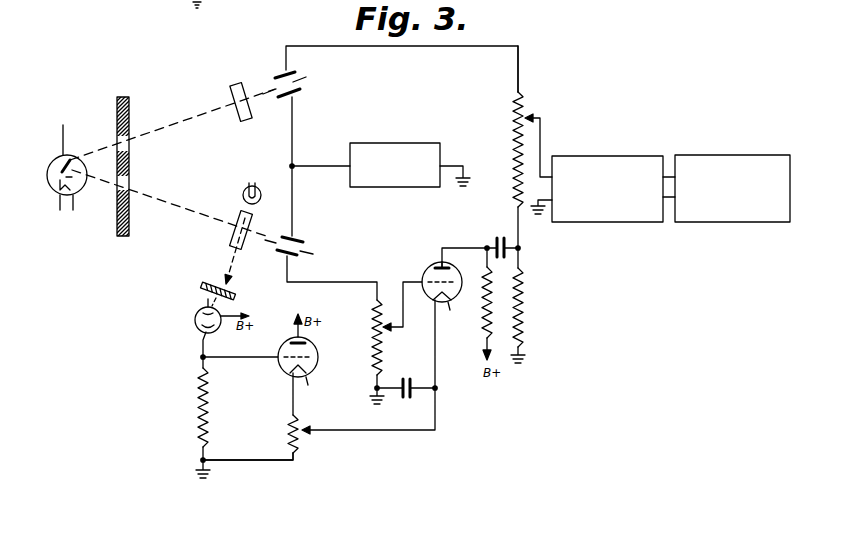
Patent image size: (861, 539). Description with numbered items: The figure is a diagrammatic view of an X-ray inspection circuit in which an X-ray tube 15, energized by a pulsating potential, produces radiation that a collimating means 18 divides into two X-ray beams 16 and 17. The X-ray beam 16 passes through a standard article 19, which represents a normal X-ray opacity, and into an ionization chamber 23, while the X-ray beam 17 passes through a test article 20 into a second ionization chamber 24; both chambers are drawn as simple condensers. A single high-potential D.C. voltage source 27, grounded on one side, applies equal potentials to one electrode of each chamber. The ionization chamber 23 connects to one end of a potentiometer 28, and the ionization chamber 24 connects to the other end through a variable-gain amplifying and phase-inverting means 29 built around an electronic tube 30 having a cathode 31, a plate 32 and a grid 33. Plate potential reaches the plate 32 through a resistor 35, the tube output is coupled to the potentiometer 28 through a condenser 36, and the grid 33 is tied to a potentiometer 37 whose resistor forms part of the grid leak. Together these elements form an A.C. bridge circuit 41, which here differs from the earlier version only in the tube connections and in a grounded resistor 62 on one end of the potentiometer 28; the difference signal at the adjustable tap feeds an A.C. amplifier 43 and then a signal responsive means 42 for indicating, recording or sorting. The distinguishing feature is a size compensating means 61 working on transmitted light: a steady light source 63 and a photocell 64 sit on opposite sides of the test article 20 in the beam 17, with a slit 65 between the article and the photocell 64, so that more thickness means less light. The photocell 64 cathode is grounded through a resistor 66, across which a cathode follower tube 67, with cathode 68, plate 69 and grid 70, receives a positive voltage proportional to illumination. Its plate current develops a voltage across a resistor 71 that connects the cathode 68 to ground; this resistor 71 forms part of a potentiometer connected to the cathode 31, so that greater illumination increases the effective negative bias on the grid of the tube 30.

The X-ray tube 15 is at (72, 156).
The X-ray beam 16 is at (180, 117).
The X-ray beam 17 is at (172, 200).
The collimating means 18 is at (122, 97).
The standard article 19 is at (238, 86).
The test article 20 is at (230, 237).
The ionization chamber 23 is at (300, 93).
The ionization chamber 24 is at (305, 237).
The voltage source 27 is at (423, 143).
The potentiometer 28 is at (526, 109).
The variable-gain amplifying and phase-inverting means 29 is at (429, 253).
The electronic tube 30 is at (424, 266).
The cathode 31 is at (433, 307).
The anode or plate 32 is at (452, 268).
The grid 33 is at (455, 296).
The resistor 35 is at (482, 334).
The condenser 36 is at (502, 238).
The potentiometer 37 is at (383, 343).
The A.C. bridge circuit 41 is at (535, 82).
The signal responsive means 42 is at (720, 155).
The A.C. amplifier 43 is at (602, 152).
The size compensating means 61 is at (308, 466).
The grounded resistor 62 is at (528, 308).
The steady light source 63 is at (243, 192).
The photocell 64 is at (195, 320).
The slit 65 is at (235, 291).
The resistor 66 is at (198, 407).
The cathode follower tube 67 is at (280, 363).
The cathode 68 is at (308, 372).
The plate 69 is at (316, 341).
The grid 70 is at (320, 360).
The resistor 71 is at (285, 430).